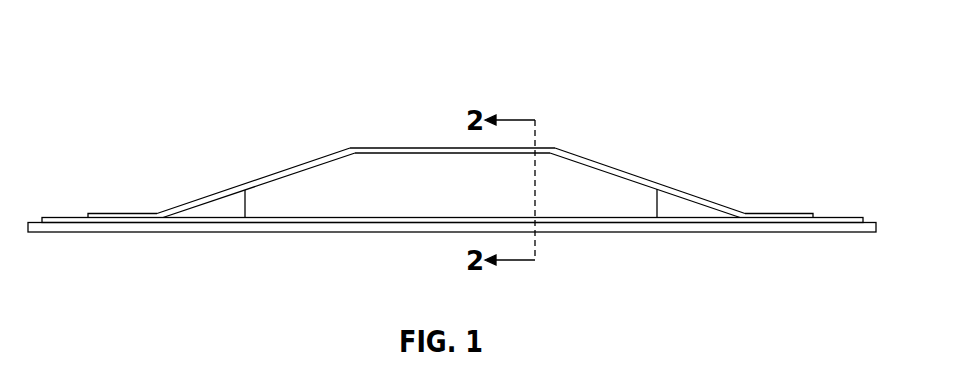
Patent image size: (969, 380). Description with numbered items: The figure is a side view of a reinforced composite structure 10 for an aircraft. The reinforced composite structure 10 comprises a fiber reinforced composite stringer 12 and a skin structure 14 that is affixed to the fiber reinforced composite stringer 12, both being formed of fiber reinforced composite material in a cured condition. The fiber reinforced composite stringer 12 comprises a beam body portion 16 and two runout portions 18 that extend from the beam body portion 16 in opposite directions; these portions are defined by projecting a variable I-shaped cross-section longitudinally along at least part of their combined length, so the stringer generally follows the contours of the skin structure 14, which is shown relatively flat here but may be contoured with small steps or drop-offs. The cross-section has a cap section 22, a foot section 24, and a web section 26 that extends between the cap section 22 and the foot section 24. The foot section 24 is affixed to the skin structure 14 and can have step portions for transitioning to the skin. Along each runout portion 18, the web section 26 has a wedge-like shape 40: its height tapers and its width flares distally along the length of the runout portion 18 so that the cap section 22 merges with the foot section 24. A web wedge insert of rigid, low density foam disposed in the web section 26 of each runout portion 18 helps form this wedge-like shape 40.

The reinforced composite structure 10 is at (138, 53).
The fiber reinforced composite stringer 12 is at (585, 173).
The skin structure 14 is at (122, 228).
The beam body portion 16 is at (417, 167).
The runout portions 18 is at (297, 186).
The cap section 22 is at (254, 180).
The foot section 24 is at (308, 222).
The web section 26 is at (377, 179).
The wedge-like shape 40 is at (214, 199).